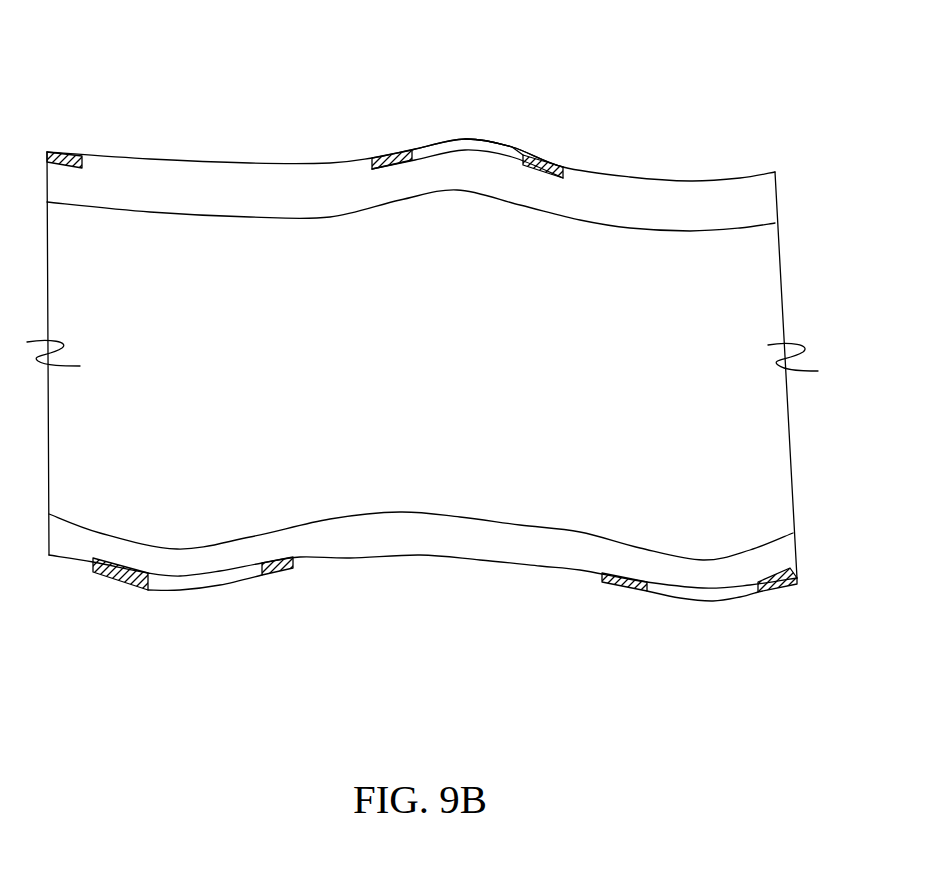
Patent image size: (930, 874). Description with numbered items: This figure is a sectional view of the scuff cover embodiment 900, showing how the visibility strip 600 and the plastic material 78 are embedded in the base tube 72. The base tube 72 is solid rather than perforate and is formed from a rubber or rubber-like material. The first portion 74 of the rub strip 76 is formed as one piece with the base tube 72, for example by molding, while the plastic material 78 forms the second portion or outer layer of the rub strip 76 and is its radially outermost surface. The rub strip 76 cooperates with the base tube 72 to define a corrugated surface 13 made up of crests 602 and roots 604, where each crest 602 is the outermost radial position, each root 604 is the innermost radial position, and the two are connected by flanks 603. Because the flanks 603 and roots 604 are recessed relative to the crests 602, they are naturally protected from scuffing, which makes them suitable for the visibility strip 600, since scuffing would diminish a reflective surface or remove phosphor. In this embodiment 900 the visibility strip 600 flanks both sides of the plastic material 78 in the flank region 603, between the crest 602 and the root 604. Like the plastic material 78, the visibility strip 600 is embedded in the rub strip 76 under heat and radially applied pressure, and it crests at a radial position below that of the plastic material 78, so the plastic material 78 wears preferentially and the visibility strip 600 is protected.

The embodiment 900 is at (72, 642).
The corrugated surface 13 is at (523, 642).
The root 604 is at (202, 154).
The rub strip 76 is at (510, 146).
The crest 602 is at (467, 130).
The plastic material 78 is at (445, 150).
The visibility strip 600 is at (385, 157).
The first portion 74 is at (478, 188).
The base tube 72 is at (460, 540).
The flank 603 is at (445, 613).